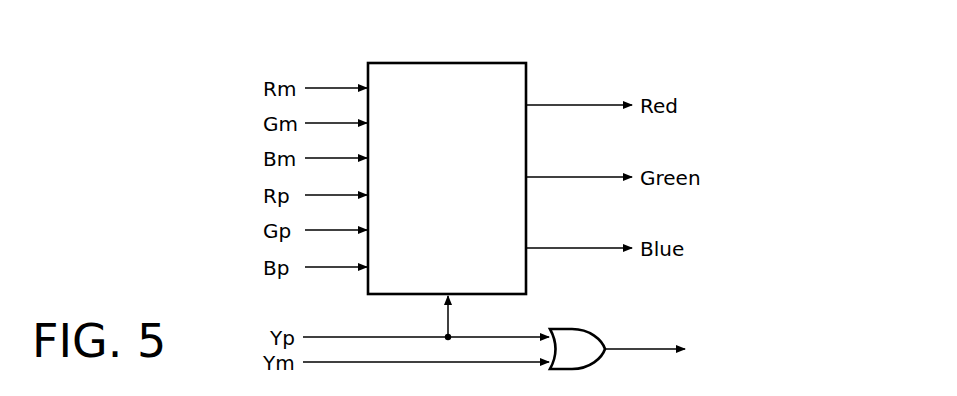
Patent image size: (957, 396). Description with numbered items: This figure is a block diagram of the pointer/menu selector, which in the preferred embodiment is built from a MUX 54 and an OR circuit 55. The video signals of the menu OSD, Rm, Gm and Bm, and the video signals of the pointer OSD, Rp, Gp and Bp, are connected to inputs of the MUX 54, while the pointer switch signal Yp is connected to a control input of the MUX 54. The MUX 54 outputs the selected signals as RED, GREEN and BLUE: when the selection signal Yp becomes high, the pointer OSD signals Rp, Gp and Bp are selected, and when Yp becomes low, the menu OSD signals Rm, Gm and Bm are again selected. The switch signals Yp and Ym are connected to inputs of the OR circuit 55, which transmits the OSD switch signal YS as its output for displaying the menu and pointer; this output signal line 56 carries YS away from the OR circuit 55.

The selector (MUX) 54 is at (490, 62).
The OR gate 55 is at (583, 329).
The YS output signal line 56 is at (660, 350).